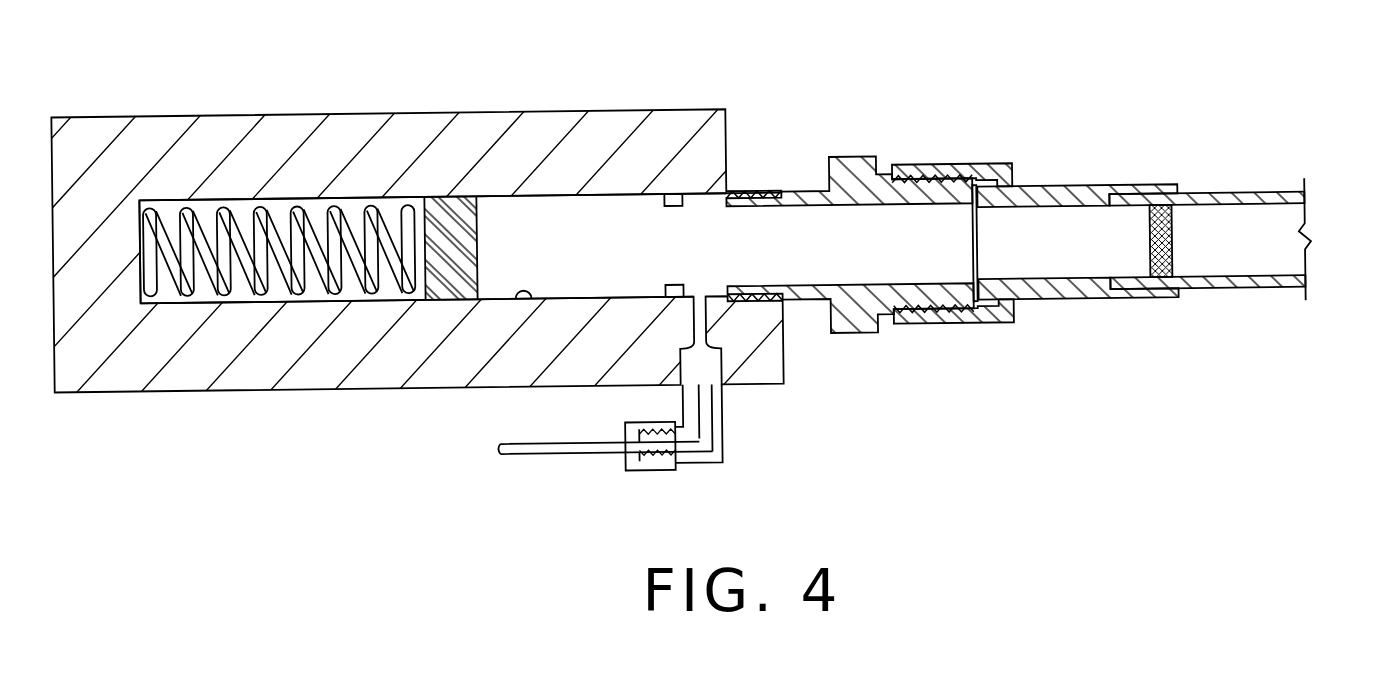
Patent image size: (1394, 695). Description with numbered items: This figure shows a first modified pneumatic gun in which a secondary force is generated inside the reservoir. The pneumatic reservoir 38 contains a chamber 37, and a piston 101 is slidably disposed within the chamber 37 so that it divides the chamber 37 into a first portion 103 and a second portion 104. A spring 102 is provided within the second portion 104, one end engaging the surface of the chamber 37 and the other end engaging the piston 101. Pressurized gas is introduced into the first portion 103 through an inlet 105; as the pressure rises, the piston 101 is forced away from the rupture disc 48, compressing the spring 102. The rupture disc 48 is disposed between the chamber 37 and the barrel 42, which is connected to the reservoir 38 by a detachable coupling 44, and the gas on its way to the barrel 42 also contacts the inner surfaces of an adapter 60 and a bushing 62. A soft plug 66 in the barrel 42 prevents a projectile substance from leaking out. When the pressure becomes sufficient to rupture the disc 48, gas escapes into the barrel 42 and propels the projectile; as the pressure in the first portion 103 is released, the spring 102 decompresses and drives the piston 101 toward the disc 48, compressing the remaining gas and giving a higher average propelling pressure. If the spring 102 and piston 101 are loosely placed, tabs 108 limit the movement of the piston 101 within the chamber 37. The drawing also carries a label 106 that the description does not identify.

The pneumatic reservoir 38 is at (286, 133).
The second portion 104 is at (250, 208).
The spring 102 is at (187, 286).
The piston 101 is at (478, 228).
The first portion 103 is at (624, 212).
The tabs 108 is at (683, 282).
The chamber 37 is at (512, 300).
The outlet passage 106 is at (740, 302).
The inlet 105 is at (698, 440).
The adapter 60 is at (808, 188).
The detachable coupling 44 is at (948, 327).
The rupture disc 48 is at (976, 245).
The bushing 62 is at (1070, 185).
The barrel 42 is at (1248, 193).
The soft plug 66 is at (1173, 245).